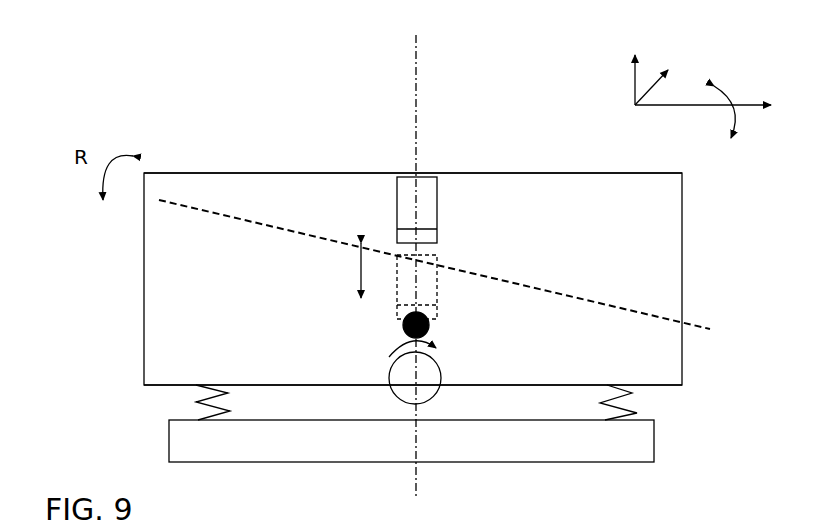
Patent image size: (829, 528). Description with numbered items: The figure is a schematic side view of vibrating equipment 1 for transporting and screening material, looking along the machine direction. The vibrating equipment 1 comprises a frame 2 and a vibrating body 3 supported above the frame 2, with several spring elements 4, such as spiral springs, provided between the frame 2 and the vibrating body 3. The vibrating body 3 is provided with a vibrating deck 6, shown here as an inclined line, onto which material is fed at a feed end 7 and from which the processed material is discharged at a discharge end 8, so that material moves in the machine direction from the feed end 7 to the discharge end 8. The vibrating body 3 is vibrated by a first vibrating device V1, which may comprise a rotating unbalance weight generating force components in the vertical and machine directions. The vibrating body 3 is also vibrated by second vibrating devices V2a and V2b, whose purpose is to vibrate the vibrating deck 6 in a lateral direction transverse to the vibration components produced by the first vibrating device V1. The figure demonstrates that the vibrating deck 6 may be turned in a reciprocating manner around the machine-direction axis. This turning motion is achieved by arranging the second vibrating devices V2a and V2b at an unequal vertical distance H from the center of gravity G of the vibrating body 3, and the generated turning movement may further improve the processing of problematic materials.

The vibrating equipment 1 is at (270, 85).
The frame 2 is at (310, 448).
The vibrating body 3 is at (122, 323).
The spring elements 4 is at (197, 402).
The vibrating deck 6 is at (648, 315).
The feed end 7 is at (190, 142).
The discharge end 8 is at (654, 154).
The second vibrating device V2a is at (426, 205).
The second vibrating device V2b is at (427, 285).
The first vibrating device V1 is at (415, 372).
The center of gravity G is at (403, 328).
The vertical distance H is at (347, 270).